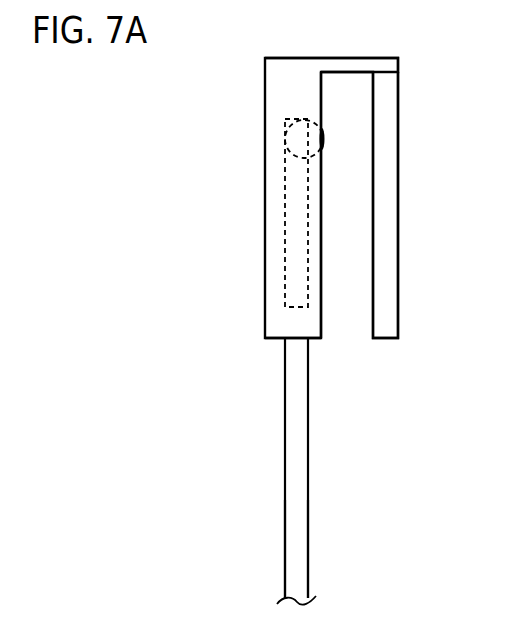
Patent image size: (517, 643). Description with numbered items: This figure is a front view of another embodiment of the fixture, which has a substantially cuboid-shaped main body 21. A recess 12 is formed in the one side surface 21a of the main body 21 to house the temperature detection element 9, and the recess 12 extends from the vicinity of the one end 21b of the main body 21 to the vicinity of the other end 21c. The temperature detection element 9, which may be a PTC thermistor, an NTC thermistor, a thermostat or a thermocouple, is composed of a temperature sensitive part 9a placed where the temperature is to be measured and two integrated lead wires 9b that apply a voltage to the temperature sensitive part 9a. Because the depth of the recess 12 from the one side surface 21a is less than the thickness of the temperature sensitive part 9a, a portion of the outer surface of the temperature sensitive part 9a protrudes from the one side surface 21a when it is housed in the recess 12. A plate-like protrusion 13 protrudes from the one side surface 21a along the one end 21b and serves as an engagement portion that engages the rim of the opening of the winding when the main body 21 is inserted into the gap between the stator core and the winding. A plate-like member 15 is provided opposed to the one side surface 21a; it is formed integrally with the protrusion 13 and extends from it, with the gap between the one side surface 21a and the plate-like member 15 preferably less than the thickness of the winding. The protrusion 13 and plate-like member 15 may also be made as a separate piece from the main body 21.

The main body 21 is at (252, 200).
The one side surface 21a is at (322, 318).
The one end 21b is at (277, 58).
The other end 21c is at (272, 338).
The protrusion 13 is at (347, 63).
The plate-like member 15 is at (392, 310).
The recess 12 is at (308, 238).
The temperature detection element 9 is at (274, 412).
The temperature sensitive part 9a is at (323, 139).
The lead wires 9b is at (287, 528).